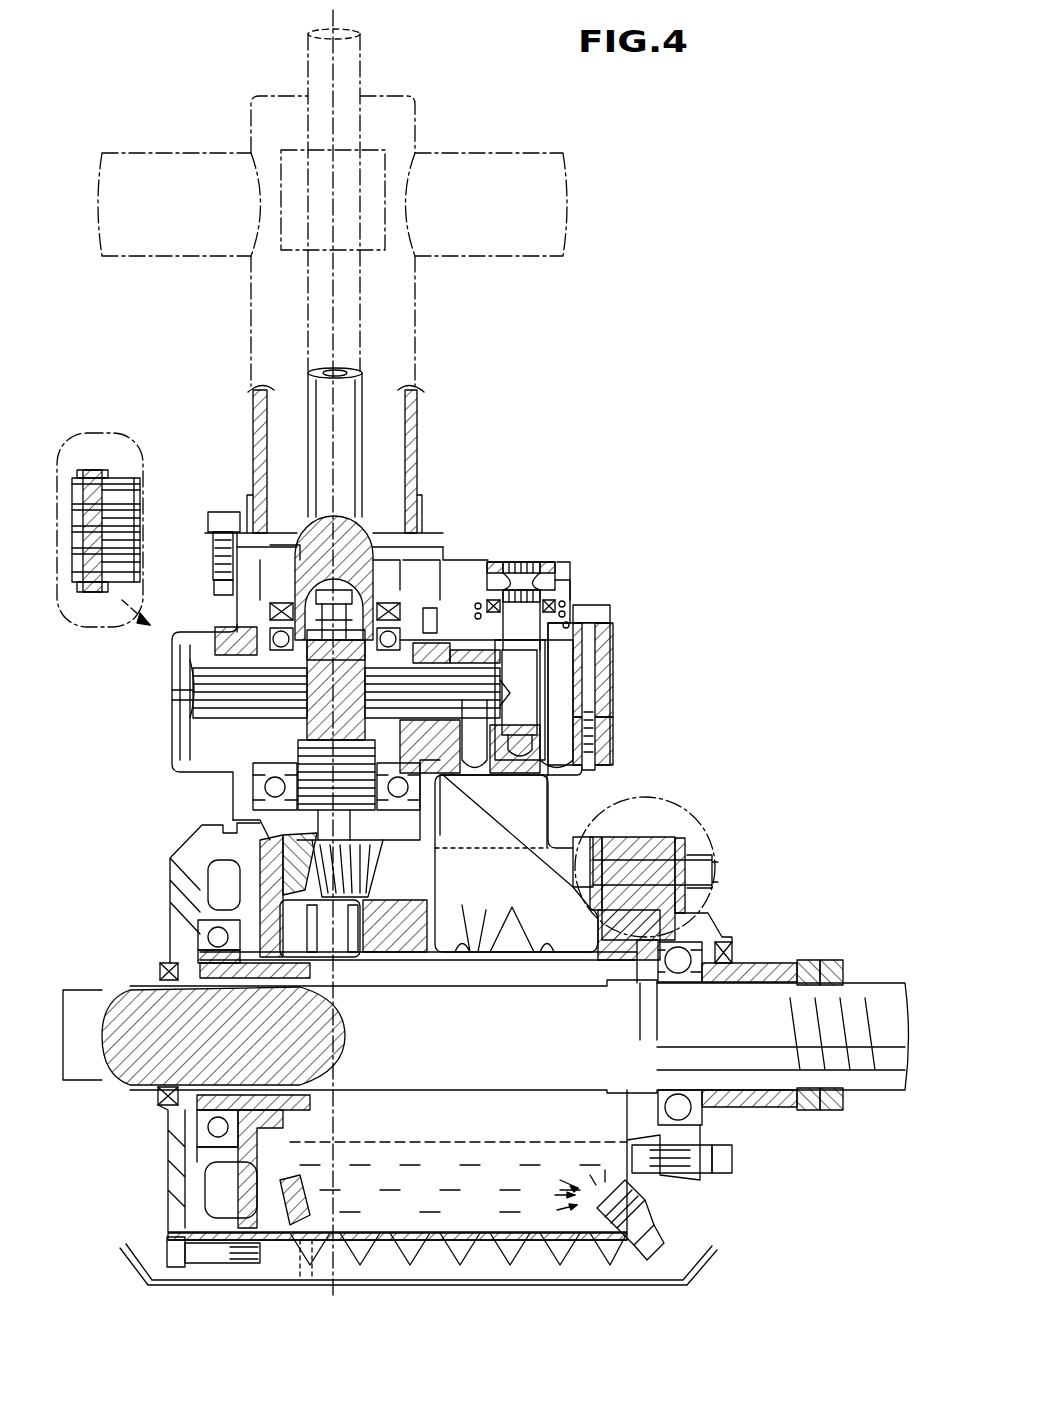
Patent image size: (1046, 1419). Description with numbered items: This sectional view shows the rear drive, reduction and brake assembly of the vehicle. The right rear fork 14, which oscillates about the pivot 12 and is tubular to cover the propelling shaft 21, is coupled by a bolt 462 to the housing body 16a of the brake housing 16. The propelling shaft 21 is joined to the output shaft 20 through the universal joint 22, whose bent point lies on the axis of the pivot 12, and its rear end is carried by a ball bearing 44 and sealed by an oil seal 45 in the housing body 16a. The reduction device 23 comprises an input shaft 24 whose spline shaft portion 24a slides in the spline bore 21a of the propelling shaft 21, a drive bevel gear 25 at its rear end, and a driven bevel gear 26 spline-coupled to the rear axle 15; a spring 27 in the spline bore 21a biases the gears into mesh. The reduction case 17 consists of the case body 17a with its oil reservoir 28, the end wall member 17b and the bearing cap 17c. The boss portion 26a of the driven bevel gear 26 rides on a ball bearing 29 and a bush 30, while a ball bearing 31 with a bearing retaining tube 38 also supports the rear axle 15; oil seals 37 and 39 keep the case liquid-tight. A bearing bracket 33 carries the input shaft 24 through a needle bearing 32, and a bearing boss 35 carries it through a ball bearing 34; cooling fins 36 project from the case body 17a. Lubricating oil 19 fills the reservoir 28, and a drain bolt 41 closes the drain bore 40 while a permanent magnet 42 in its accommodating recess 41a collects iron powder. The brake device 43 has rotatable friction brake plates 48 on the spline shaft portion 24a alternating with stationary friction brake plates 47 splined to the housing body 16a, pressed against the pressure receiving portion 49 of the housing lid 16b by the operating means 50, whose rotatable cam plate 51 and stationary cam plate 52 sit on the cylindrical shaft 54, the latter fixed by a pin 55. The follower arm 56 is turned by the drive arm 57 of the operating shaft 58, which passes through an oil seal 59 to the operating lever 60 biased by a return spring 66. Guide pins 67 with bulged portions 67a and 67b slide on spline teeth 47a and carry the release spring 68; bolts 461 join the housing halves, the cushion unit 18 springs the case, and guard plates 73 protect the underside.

The pivot 12 is at (158, 260).
The right rear fork 14 is at (417, 395).
The rear axle 15 is at (530, 1038).
The brake housing 16 is at (703, 650).
The housing body 16a is at (613, 670).
The housing lid 16b is at (613, 740).
The reduction case 17 is at (562, 950).
The case body 17a is at (460, 950).
The end wall member 17b is at (175, 1195).
The bearing cap 17c is at (712, 915).
The cushion unit 18 is at (700, 810).
The lubricating oil 19 is at (455, 1140).
The output shaft 20 is at (360, 55).
The propelling shaft 21 is at (362, 420).
The spline bore 21a is at (355, 520).
The universal joint 22 is at (275, 130).
The reduction device 23 is at (240, 896).
The input shaft 24 is at (290, 745).
The spline shaft portion 24a is at (336, 647).
The drive bevel gear 25 is at (385, 870).
The driven bevel gear 26 is at (300, 1200).
The boss portion 26a is at (310, 1105).
The spring 27 is at (322, 545).
The oil reservoir 28 is at (360, 1260).
The ball bearing 29 is at (208, 938).
The bush 30 is at (300, 1000).
The ball bearing 31 is at (676, 982).
The needle bearing 32 is at (355, 955).
The bearing bracket 33 is at (410, 957).
The ball bearing 34 is at (262, 787).
The bearing boss 35 is at (440, 820).
The cooling fins 36 is at (510, 920).
The oil seal 37 is at (160, 971).
The bearing retaining tube 38 is at (775, 963).
The oil seal 39 is at (732, 948).
The drain bore 40 is at (652, 1203).
The drain bolt 41 is at (660, 1252).
The accommodating recess 41a is at (590, 1245).
The permanent magnet 42 is at (548, 1190).
The brake device 43 is at (178, 735).
The ball bearing 44 is at (408, 600).
The oil seal 45 is at (385, 560).
The bolts 461 is at (610, 614).
The bolt 462 is at (222, 512).
The stationary friction brake plates 47 is at (531, 703).
The spline teeth 47a is at (68, 470).
The rotatable friction brake plates 48 is at (366, 679).
The pressure receiving portion 49 is at (490, 765).
The operating means 50 is at (280, 560).
The rotatable cam plate 51 is at (215, 660).
The stationary cam plate 52 is at (228, 627).
The cylindrical shaft 54 is at (270, 612).
The pin 55 is at (437, 612).
The follower arm 56 is at (482, 580).
The drive arm 57 is at (520, 600).
The operating shaft 58 is at (523, 560).
The oil seal 59 is at (565, 600).
The operating lever 60 is at (547, 577).
The return spring 66 is at (567, 600).
The guide pins 67 is at (120, 520).
The slip-out preventing bulged portion 67a is at (100, 470).
The slip-out preventing bulged portion 67b is at (115, 622).
The release spring 68 is at (120, 555).
The guard plates 73 is at (717, 1250).